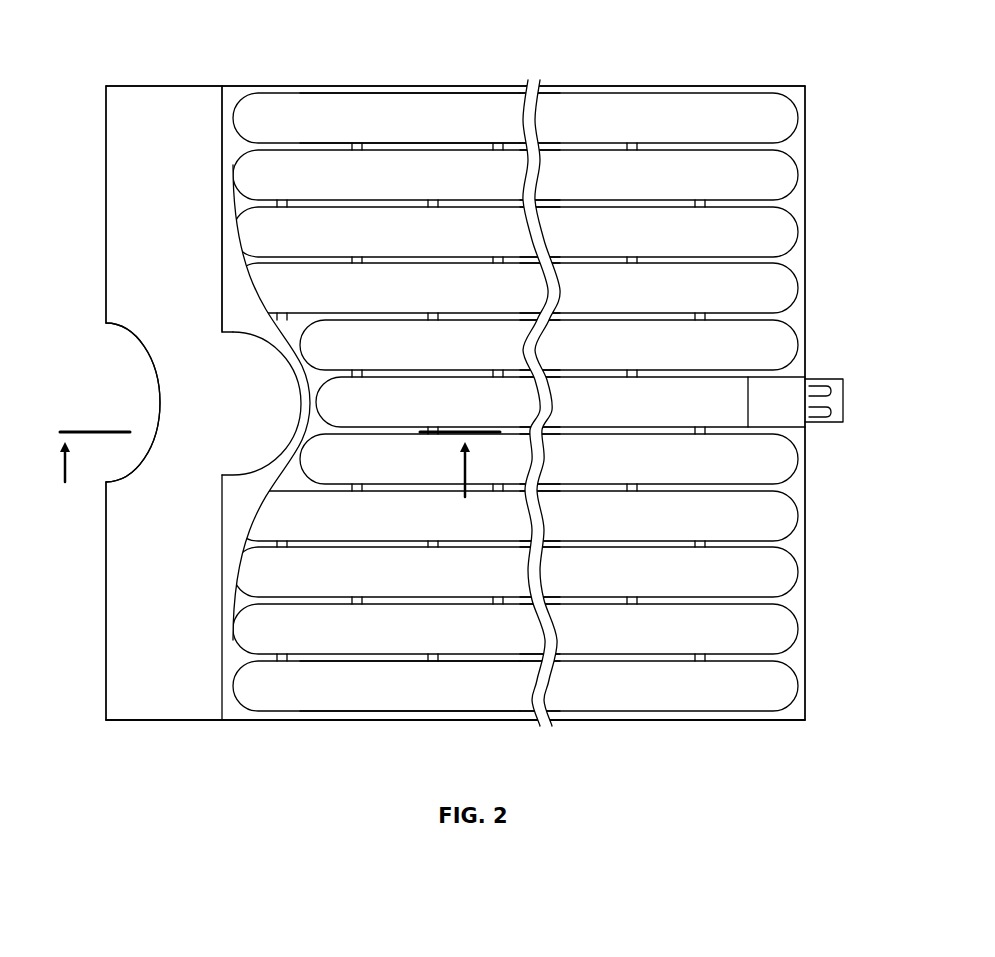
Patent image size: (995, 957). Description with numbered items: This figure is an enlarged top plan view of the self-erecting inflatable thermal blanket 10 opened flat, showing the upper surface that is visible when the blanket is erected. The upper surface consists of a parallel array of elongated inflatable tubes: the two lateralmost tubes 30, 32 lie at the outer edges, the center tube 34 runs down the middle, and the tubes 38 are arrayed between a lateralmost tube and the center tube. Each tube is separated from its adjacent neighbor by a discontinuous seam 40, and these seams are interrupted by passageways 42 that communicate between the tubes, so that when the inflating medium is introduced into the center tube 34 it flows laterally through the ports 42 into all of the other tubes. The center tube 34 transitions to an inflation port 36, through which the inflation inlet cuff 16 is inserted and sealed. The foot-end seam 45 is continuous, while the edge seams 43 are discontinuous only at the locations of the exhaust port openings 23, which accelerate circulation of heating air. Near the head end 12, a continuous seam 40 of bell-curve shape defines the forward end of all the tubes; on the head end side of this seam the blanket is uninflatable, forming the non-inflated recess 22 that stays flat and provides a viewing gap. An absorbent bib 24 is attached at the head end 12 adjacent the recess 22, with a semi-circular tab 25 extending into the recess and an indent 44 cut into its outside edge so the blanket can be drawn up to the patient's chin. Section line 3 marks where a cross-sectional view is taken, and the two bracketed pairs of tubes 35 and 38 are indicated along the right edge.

The thermal blanket 10 is at (624, 727).
The head end 12 is at (222, 708).
The inflation inlet cuff 16 is at (820, 396).
The non-inflated blanket recess 22 is at (230, 303).
The exhaust port openings 23 is at (287, 95).
The bib 24 is at (156, 95).
The semi-circular tab 25 is at (266, 440).
The lateralmost tube 30 is at (500, 692).
The lateralmost tube 32 is at (487, 100).
The center tube 34 is at (648, 412).
The fin pair 35 is at (798, 175).
The inflation port 36 is at (738, 387).
The tubes 38 is at (798, 288).
The seam 40 is at (244, 525).
The passageways 42 is at (357, 148).
The edge seams 43 is at (405, 86).
The indent 44 is at (138, 363).
The foot-end seam 45 is at (808, 136).
The section line 3 is at (279, 477).